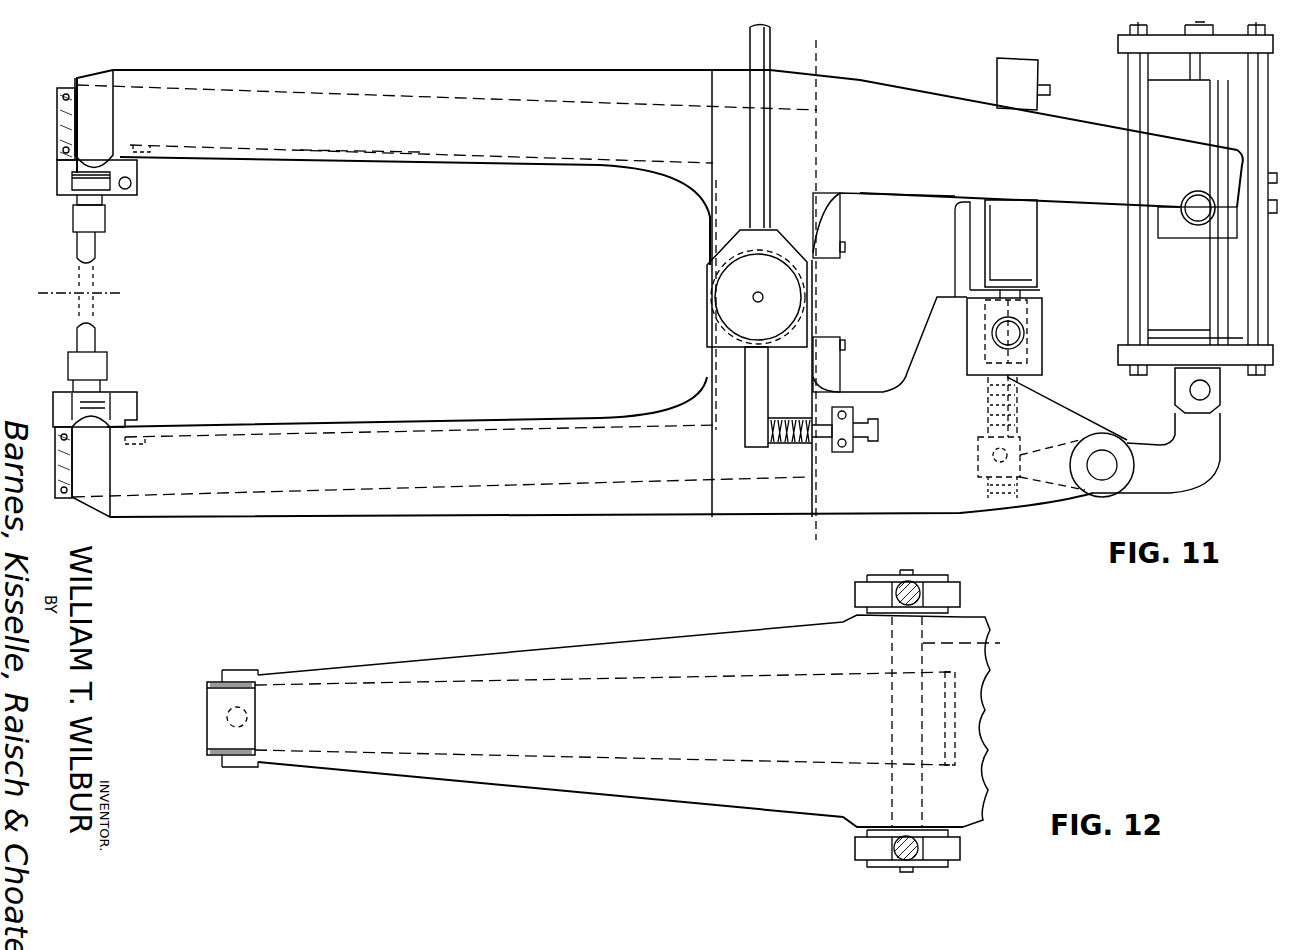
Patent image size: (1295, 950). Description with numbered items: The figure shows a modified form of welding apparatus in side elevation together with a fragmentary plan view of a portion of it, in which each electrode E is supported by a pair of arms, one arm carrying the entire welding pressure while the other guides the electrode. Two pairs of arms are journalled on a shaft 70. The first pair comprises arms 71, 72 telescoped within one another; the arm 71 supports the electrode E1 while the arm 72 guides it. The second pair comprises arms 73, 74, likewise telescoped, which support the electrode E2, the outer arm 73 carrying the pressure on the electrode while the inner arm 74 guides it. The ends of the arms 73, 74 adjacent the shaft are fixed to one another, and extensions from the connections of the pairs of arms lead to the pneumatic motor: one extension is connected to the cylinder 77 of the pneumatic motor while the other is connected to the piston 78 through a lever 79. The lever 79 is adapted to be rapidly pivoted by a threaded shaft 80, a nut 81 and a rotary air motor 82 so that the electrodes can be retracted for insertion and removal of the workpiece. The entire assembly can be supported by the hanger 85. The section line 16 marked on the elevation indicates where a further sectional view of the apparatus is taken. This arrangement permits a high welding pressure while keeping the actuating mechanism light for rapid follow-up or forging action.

In FIG. 11, the section line 16— 16 is at (793, 35).
In FIG. 12, the shaft 70 is at (1000, 643).
In FIG. 11, the arm 71 is at (411, 424).
In FIG. 11, the arm 72 is at (512, 424).
In FIG. 12, the arm 72 is at (577, 678).
In FIG. 11, the outer arm 73 is at (385, 70).
In FIG. 12, the outer arm 73 is at (516, 645).
In FIG. 11, the inner arm 74 is at (412, 160).
In FIG. 11, the cylinder 77 is at (1160, 100).
In FIG. 11, the piston 78 is at (1210, 388).
In FIG. 11, the lever 79 is at (1205, 464).
In FIG. 11, the threaded shaft 80 is at (1030, 393).
In FIG. 11, the nut 81 is at (1030, 427).
In FIG. 11, the rotary air motor 82 is at (1030, 248).
In FIG. 11, the hanger 85 is at (755, 45).
In FIG. 12, the hanger 85 is at (915, 585).
In FIG. 12, the electrode E is at (228, 722).
In FIG. 11, the electrode E1 is at (95, 340).
In FIG. 11, the electrode E2 is at (95, 247).